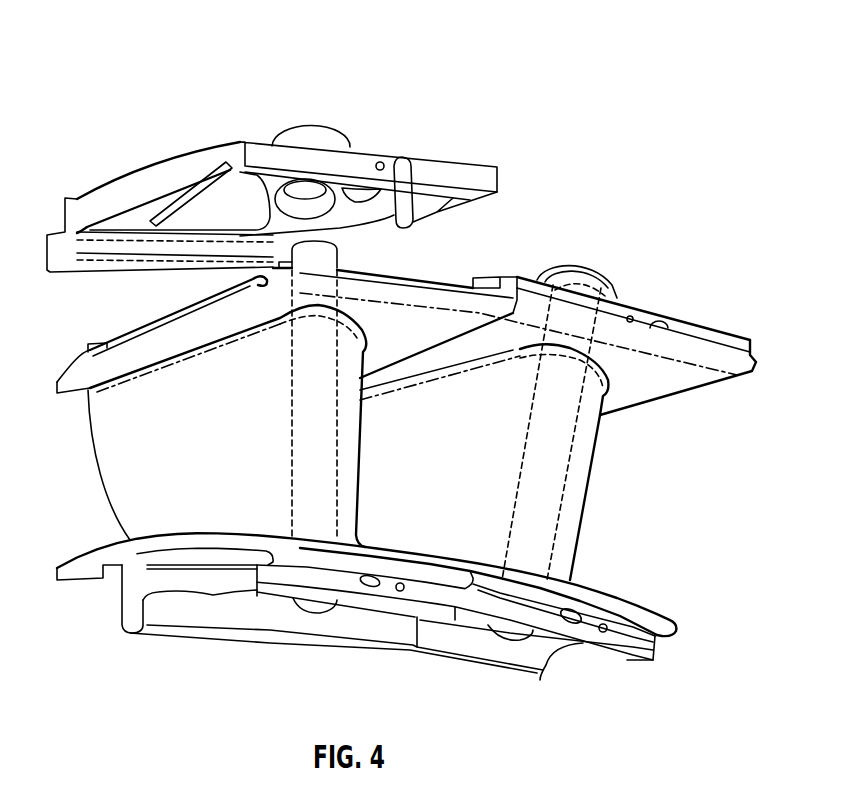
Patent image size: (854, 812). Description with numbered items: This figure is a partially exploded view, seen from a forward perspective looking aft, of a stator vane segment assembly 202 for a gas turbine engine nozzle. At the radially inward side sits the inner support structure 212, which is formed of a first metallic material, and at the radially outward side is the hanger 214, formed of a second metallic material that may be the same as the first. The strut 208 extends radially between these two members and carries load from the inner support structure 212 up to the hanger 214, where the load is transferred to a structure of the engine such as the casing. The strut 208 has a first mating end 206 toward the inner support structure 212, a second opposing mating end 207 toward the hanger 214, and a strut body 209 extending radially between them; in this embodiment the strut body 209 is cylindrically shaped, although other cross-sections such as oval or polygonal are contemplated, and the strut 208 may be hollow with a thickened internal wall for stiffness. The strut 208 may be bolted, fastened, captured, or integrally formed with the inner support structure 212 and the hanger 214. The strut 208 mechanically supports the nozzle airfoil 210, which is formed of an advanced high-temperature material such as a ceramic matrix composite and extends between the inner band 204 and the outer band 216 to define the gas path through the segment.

The stator vane segment assembly 202 is at (196, 57).
The inner band 204 is at (112, 548).
The first mating end 206 is at (291, 645).
The second opposing mating end 207 is at (345, 264).
The strut 208 is at (555, 478).
The strut body 209 is at (307, 413).
The nozzle airfoil 210 is at (120, 472).
The inner support structure 212 is at (130, 620).
The hanger 214 is at (160, 184).
The outer band 216 is at (92, 360).